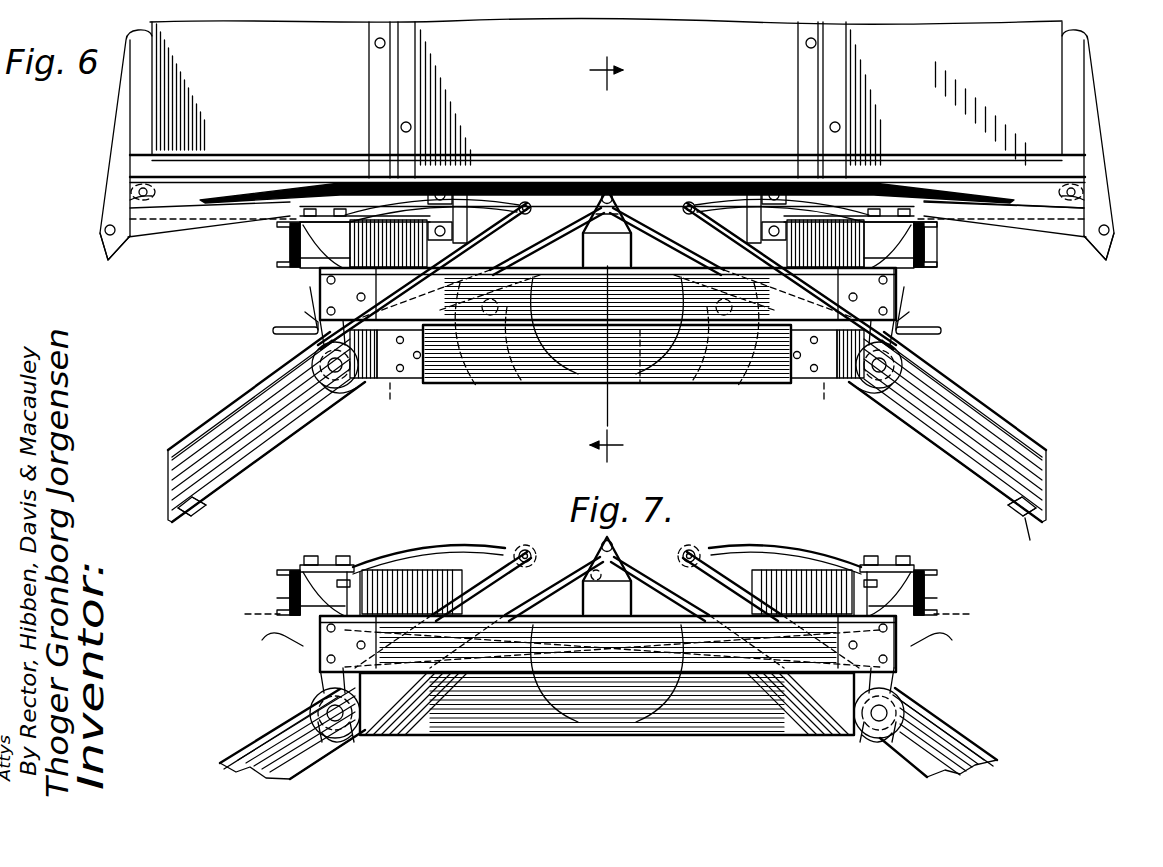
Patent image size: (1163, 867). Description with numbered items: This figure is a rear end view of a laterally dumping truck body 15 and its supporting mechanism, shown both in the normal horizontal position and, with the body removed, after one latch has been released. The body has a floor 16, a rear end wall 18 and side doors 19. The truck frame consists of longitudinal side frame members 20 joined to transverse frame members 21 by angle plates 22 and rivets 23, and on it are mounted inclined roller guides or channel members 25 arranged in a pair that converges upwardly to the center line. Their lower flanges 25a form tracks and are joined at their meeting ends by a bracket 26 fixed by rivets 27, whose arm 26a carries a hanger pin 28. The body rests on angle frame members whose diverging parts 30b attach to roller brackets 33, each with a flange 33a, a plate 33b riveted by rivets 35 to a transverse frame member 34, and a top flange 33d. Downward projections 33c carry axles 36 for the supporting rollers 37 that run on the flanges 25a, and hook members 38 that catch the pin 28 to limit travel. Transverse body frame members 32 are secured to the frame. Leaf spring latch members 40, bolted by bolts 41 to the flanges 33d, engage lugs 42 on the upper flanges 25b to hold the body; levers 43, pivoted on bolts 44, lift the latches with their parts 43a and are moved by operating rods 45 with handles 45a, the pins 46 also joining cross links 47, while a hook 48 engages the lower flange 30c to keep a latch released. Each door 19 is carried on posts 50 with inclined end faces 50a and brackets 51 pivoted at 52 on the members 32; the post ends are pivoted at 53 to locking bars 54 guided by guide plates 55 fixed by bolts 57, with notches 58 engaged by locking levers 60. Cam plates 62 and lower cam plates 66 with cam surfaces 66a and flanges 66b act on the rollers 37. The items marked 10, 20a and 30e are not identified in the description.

In FIG. 6, the center line of vehicle body 10 is at (596, 260).
In FIG. 6, the body 15 is at (655, 156).
In FIG. 6, the truck floor 16 is at (240, 163).
In FIG. 6, the rear end wall 18 is at (606, 98).
In FIG. 6, the side walls or dumping doors 19 is at (148, 88).
In FIG. 6, the longitudinal side frame members 20 is at (420, 380).
In FIG. 6, the pivot pin 20a is at (636, 199).
In FIG. 6, the transverse frame members 21 is at (706, 385).
In FIG. 7, the transverse frame members 21 is at (690, 668).
In FIG. 6, the angle plates 22 is at (385, 388).
In FIG. 6, the rivets 23 is at (450, 383).
In FIG. 6, the roller guides or channel members 25 is at (258, 440).
In FIG. 7, the roller guides or channel members 25 is at (270, 770).
In FIG. 6, the lower flanges 25a is at (295, 440).
In FIG. 7, the lower flanges 25a is at (312, 770).
In FIG. 6, the upper flanges 25b is at (270, 418).
In FIG. 7, the upper flanges 25b is at (225, 762).
In FIG. 6, the bracket 26 is at (607, 227).
In FIG. 7, the bracket 26 is at (597, 570).
In FIG. 7, the upwardly extending arm 26a is at (632, 572).
In FIG. 6, the rivets 27 is at (642, 249).
In FIG. 7, the rivets 27 is at (625, 597).
In FIG. 6, the hanger pin 28 is at (608, 191).
In FIG. 7, the hanger pin 28 is at (612, 547).
In FIG. 6, the outwardly diverging parts 30b is at (922, 248).
In FIG. 7, the outwardly diverging parts 30b is at (270, 575).
In FIG. 7, the lower flange 30c is at (275, 602).
In FIG. 6, the rail web 30e is at (601, 189).
In FIG. 6, the transverse body frame members 32 is at (1000, 222).
In FIG. 6, the roller bracket 33 is at (288, 240).
In FIG. 7, the roller bracket 33 is at (290, 585).
In FIG. 6, the flange 33a is at (330, 246).
In FIG. 7, the flange 33a is at (302, 580).
In FIG. 6, the flange or plate 33b is at (315, 258).
In FIG. 7, the flange or plate 33b is at (300, 622).
In FIG. 6, the projections 33c is at (305, 358).
In FIG. 7, the projections 33c is at (312, 706).
In FIG. 6, the top horizontal flanges 33d is at (607, 243).
In FIG. 7, the top horizontal flanges 33d is at (352, 565).
In FIG. 6, the transverse frame members 34 is at (607, 346).
In FIG. 7, the transverse frame members 34 is at (525, 668).
In FIG. 6, the rivets 35 is at (330, 282).
In FIG. 7, the rivets 35 is at (330, 646).
In FIG. 6, the axles 36 is at (334, 390).
In FIG. 7, the axles 36 is at (322, 712).
In FIG. 6, the supporting rollers 37 is at (342, 390).
In FIG. 7, the supporting rollers 37 is at (318, 724).
In FIG. 6, the hook members 38 is at (356, 394).
In FIG. 7, the hook members 38 is at (360, 744).
In FIG. 6, the latch members 40 is at (478, 198).
In FIG. 7, the latch members 40 is at (392, 551).
In FIG. 6, the bolts 41 is at (341, 208).
In FIG. 7, the bolts 41 is at (341, 555).
In FIG. 6, the lugs 42 is at (528, 202).
In FIG. 7, the lugs 42 is at (522, 550).
In FIG. 6, the levers 43 is at (607, 241).
In FIG. 7, the levers 43 is at (607, 608).
In FIG. 6, the part of lever 43a is at (607, 275).
In FIG. 7, the part of lever 43a is at (492, 558).
In FIG. 6, the bolts 44 is at (532, 204).
In FIG. 7, the bolts 44 is at (526, 549).
In FIG. 6, the operating rod 45 is at (318, 333).
In FIG. 7, the operating rod 45 is at (265, 655).
In FIG. 6, the handle 45a is at (273, 331).
In FIG. 7, the handle 45a is at (245, 614).
In FIG. 6, the pins 46 is at (490, 385).
In FIG. 7, the pins 46 is at (615, 737).
In FIG. 6, the cross links 47 is at (570, 385).
In FIG. 7, the cross links 47 is at (580, 705).
In FIG. 6, the hook 48 is at (312, 322).
In FIG. 7, the hook 48 is at (268, 612).
In FIG. 6, the stays or posts 50 is at (118, 122).
In FIG. 6, the inclined end faces 50a is at (117, 263).
In FIG. 6, the brackets 51 is at (132, 192).
In FIG. 6, the pivot 52 is at (128, 200).
In FIG. 6, the pivotal connection 53 is at (104, 232).
In FIG. 6, the locking bars 54 is at (188, 225).
In FIG. 6, the guide plates 55 is at (440, 182).
In FIG. 6, the bolts 57 is at (712, 200).
In FIG. 6, the notches 58 is at (390, 180).
In FIG. 6, the locking levers 60 is at (512, 352).
In FIG. 7, the cam plates 62 is at (338, 744).
In FIG. 6, the cam plates 66 is at (172, 512).
In FIG. 7, the cam plates 66 is at (1038, 537).
In FIG. 6, the cam surfaces 66a is at (185, 497).
In FIG. 6, the inner upwardly extending flanges 66b is at (190, 478).